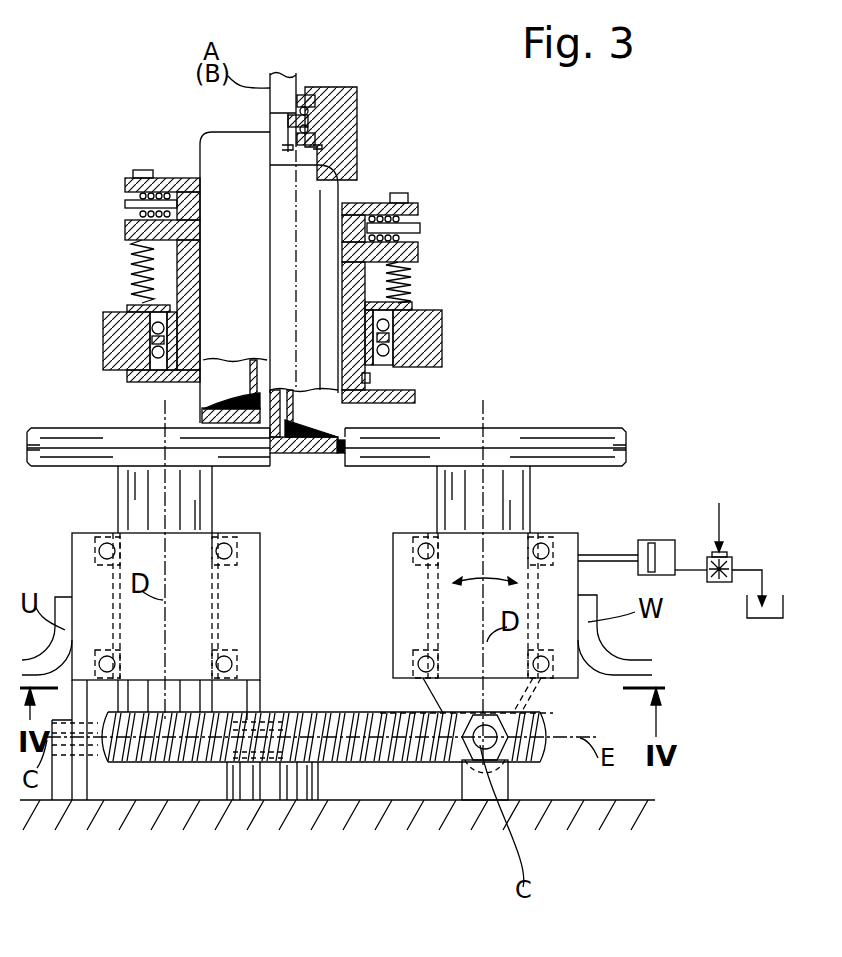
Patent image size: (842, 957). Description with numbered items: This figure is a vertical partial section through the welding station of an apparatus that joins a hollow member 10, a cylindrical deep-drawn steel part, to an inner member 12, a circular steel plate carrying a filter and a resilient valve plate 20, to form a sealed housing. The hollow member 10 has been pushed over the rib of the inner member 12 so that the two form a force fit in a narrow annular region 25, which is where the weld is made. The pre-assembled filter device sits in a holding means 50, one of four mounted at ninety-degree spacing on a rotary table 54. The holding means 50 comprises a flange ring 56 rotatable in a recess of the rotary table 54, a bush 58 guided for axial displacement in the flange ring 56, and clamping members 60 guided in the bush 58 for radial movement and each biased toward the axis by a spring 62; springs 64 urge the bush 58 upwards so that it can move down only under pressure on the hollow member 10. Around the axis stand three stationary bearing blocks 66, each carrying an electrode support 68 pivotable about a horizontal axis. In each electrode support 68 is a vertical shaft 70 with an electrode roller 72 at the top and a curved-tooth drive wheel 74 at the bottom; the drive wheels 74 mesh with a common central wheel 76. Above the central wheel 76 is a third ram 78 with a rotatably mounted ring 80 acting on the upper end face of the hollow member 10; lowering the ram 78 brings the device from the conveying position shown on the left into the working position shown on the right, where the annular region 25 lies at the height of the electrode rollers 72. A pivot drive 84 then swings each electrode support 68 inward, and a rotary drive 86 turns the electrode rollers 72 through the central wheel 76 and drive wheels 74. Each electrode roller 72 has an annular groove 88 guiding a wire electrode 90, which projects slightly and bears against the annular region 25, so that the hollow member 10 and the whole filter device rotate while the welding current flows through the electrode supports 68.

The hollow member 10 is at (227, 145).
The inner member 12 is at (325, 452).
The valve plate 20 is at (202, 400).
The annular region 25 is at (202, 410).
The holding means 50 is at (436, 208).
The rotary table 54 is at (430, 347).
The flange ring 56 is at (412, 305).
The bush 58 is at (367, 375).
The clamping members 60 is at (185, 185).
The spring 62 is at (137, 222).
The springs 64 is at (133, 261).
The bearing blocks 66 is at (63, 778).
The electrode support 68 is at (408, 632).
The shaft 70 is at (200, 497).
The electrode roller 72 is at (572, 430).
The drive wheel 74 is at (112, 758).
The central wheel 76 is at (378, 748).
The third ram 78 is at (283, 83).
The rotatably mounted ring 80 is at (348, 103).
The pivot drive 84 is at (665, 547).
The rotary drive 86 is at (305, 785).
The annular groove 88 is at (626, 447).
The wire electrode 90 is at (340, 455).